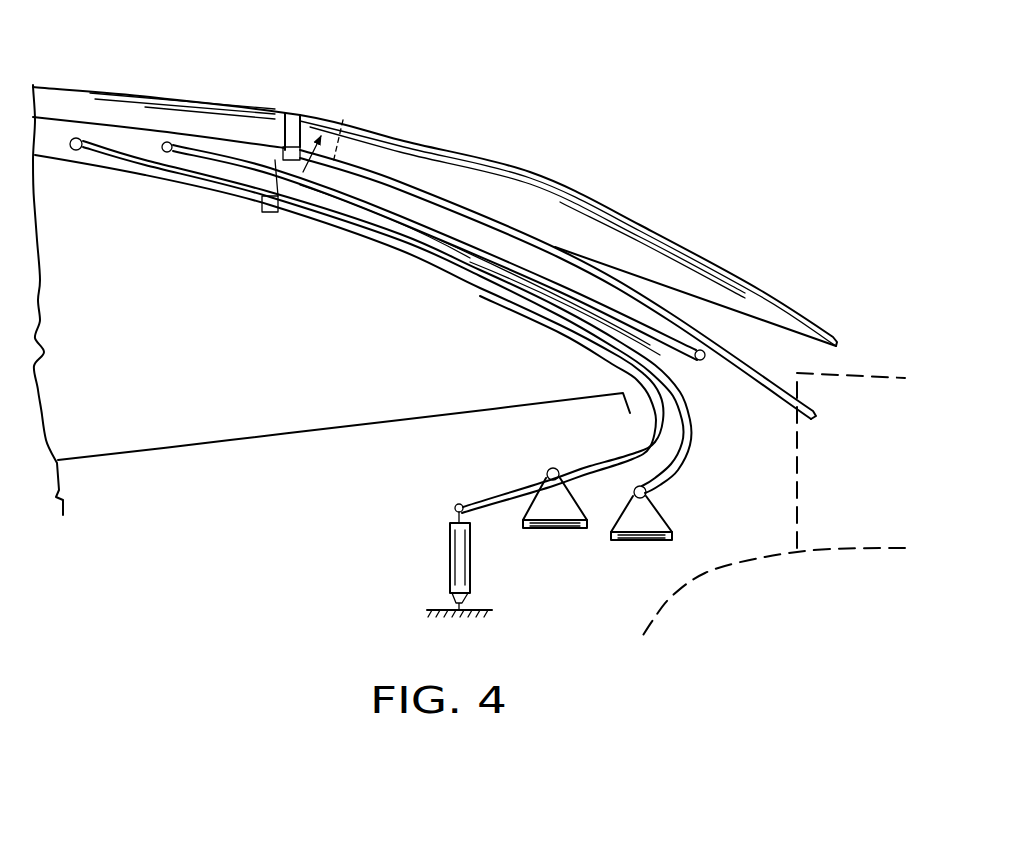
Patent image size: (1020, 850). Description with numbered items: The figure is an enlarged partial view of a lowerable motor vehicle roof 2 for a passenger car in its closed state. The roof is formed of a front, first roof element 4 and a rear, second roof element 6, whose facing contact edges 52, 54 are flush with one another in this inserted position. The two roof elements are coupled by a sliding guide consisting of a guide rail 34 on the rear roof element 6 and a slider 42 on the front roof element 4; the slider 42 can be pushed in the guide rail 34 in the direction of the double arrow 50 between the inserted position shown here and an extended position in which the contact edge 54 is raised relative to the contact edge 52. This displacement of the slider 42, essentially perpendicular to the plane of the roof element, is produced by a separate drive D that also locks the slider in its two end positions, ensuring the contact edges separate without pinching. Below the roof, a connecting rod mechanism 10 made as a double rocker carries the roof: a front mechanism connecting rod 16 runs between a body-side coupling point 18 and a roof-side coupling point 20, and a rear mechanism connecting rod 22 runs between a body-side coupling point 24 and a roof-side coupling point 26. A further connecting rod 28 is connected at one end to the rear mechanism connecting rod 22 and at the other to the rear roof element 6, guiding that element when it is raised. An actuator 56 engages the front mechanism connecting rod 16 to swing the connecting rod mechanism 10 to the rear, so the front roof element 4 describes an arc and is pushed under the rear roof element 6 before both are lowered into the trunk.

The motor vehicle roof 2 is at (480, 108).
The first roof element 4 is at (126, 104).
The second roof element 6 is at (620, 232).
The connecting rod mechanism 10 is at (430, 270).
The front mechanism connecting rod 16 is at (307, 213).
The body-side coupling point 18 is at (553, 481).
The roof-side coupling point 20 is at (76, 138).
The rear mechanism connecting rod 22 is at (363, 227).
The body-side coupling point 24 is at (650, 541).
The roof-side coupling point 26 is at (167, 141).
The connecting rod 28 is at (668, 335).
The guide rail 34 is at (497, 217).
The slider 42 is at (343, 118).
The double arrow 50 is at (328, 135).
The contact edge 52 is at (280, 110).
The contact edge 54 is at (298, 110).
The actuator 56 is at (452, 567).
The separate drive D is at (258, 198).